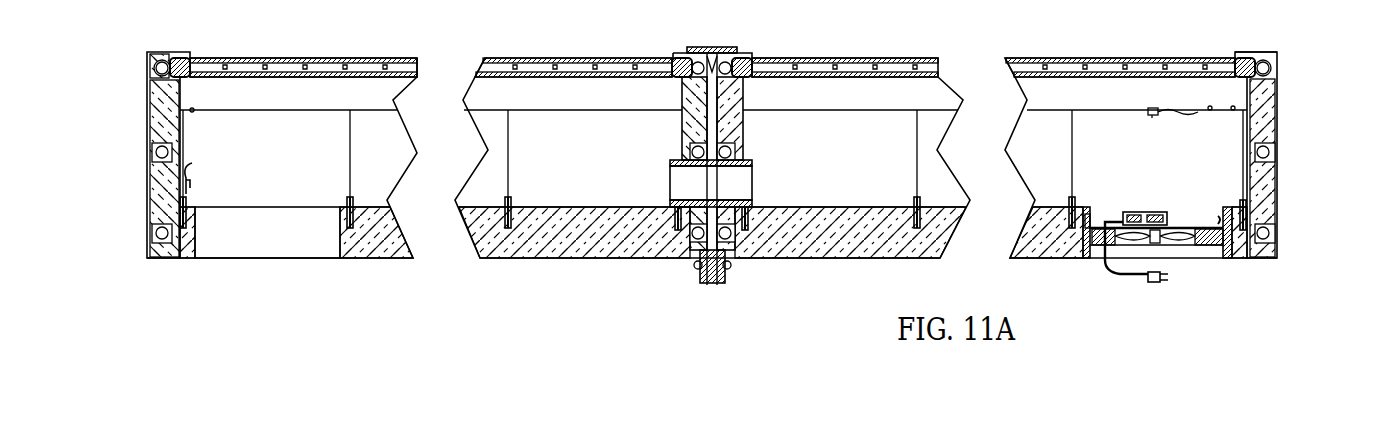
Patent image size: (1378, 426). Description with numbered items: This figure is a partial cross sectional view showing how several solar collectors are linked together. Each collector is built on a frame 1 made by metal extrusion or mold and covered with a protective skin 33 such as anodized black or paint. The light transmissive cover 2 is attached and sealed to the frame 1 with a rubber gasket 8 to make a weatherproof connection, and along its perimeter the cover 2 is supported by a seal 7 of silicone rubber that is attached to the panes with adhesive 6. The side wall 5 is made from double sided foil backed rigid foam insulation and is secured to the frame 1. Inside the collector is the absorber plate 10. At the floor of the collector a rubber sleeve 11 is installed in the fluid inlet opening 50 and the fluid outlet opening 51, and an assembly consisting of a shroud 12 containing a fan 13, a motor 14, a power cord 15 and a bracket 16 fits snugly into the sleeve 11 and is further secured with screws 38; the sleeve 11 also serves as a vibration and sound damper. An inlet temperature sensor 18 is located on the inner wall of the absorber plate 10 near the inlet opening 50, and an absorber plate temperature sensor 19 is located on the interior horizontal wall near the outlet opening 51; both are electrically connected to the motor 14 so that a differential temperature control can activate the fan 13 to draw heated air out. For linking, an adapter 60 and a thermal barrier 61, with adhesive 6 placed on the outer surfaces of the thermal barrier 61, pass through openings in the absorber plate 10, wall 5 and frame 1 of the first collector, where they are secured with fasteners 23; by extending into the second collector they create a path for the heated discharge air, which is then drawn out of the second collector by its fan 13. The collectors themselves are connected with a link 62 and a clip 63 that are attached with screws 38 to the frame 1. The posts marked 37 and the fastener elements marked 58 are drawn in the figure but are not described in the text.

The frame 1 is at (1278, 95).
The cover 2 is at (357, 58).
The wall 5 is at (682, 115).
The adhesive 6 is at (672, 62).
The seal 7 is at (188, 62).
The rubber gasket 8 is at (1250, 55).
The absorber plate 10 is at (682, 137).
The rubber sleeve 11 is at (343, 258).
The shroud 12 is at (1230, 258).
The fan 13 is at (1180, 245).
The motor 14 is at (1152, 212).
The power cord 15 is at (1112, 275).
The bracket 16 is at (1217, 222).
The inlet temperature sensor 18 is at (188, 175).
The absorber plate temperature sensor 19 is at (1150, 112).
The fasteners 23 is at (680, 203).
The skin 33 is at (1285, 143).
The post 37 is at (186, 207).
The screws 38 is at (695, 268).
The fluid inlet opening 50 is at (245, 248).
The fluid outlet opening 51 is at (1163, 250).
The fastener 58 is at (722, 47).
The adapter 60 is at (670, 178).
The thermal barrier 61 is at (752, 180).
The link 62 is at (737, 47).
The clip 63 is at (707, 283).